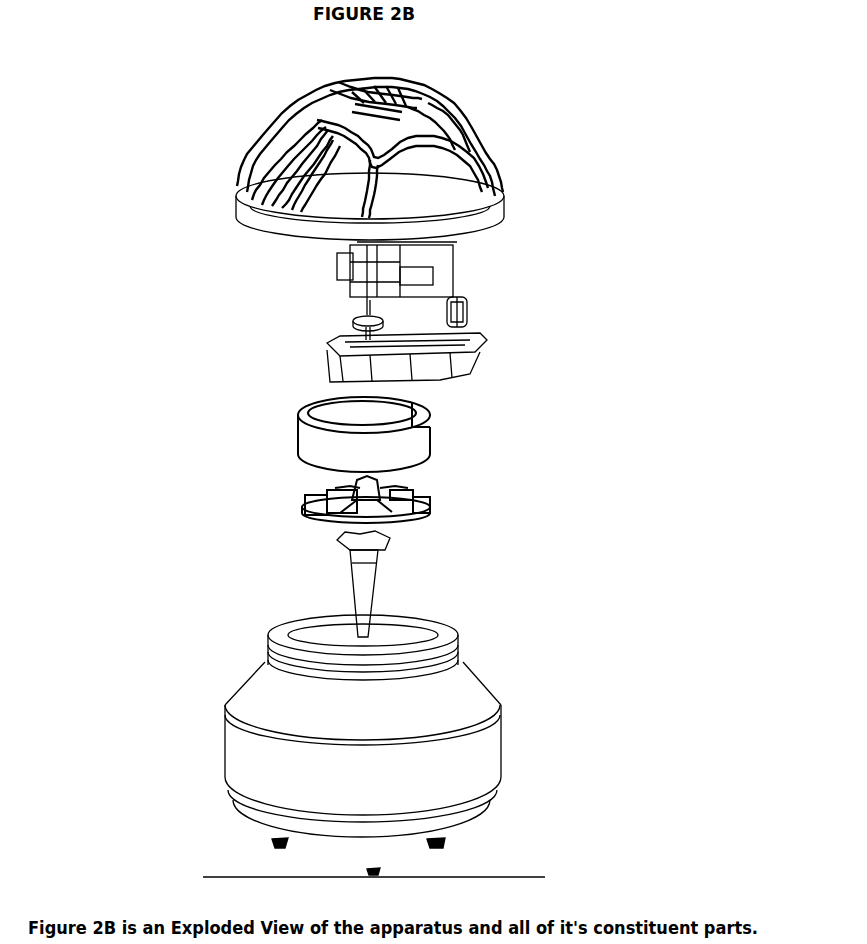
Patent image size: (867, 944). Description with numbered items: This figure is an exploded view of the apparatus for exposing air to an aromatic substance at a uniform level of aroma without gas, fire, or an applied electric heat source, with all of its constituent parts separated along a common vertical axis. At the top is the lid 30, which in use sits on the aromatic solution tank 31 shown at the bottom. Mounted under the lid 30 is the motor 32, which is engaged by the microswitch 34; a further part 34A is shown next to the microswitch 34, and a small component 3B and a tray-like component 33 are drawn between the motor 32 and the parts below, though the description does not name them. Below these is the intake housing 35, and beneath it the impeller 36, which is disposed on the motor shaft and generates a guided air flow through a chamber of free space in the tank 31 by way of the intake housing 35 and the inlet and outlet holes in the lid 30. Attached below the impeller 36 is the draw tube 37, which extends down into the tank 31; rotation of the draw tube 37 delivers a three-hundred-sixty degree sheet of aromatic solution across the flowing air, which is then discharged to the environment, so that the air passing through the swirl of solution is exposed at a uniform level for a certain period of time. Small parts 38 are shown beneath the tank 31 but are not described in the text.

The lid 30 is at (506, 212).
The aromatic solution tank 31 is at (455, 630).
The motor 32 is at (448, 272).
The shaft flange 3B is at (353, 318).
The housing tray 33 is at (476, 353).
The microswitch 34 is at (470, 308).
The capacitor cover 34A is at (480, 315).
The intake housing 35 is at (432, 422).
The impeller 36 is at (427, 497).
The draw tube 37 is at (378, 582).
The feet 38 is at (272, 840).